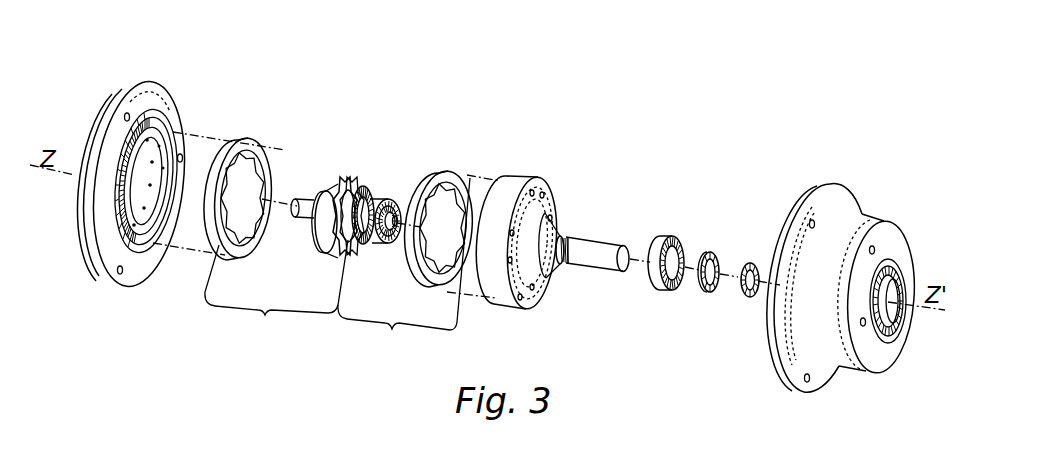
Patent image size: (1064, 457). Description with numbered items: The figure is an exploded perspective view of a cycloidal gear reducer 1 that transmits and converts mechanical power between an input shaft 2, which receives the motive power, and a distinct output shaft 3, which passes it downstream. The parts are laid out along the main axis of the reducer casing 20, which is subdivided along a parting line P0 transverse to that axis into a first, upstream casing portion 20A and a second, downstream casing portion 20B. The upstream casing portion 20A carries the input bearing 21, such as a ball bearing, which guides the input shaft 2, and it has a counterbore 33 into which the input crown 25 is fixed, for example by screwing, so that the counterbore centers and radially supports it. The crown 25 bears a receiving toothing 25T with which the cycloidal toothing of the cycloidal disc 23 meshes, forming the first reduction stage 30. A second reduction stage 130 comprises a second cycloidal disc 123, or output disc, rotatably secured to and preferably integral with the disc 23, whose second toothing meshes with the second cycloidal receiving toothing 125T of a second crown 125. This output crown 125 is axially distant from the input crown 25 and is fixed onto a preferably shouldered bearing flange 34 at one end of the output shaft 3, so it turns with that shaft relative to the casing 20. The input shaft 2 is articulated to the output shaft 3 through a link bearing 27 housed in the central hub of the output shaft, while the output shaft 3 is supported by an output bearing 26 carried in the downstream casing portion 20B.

The cycloidal gear reducer 1 is at (614, 104).
The input shaft 2 is at (308, 201).
The output shaft 3 is at (592, 247).
The reducer casing 20 is at (141, 72).
The first casing portion 20A is at (128, 90).
The second casing portion 20B is at (841, 204).
The parting line P0 is at (153, 93).
The input bearing 21 is at (314, 247).
The cycloidal disc 23 is at (340, 177).
The crown 25 is at (253, 139).
The receiving toothing 25T is at (272, 170).
The output bearing 26 is at (658, 294).
The link bearing 27 is at (385, 199).
The first reduction stage 30 is at (276, 291).
The counterbore 33 is at (158, 148).
The bearing flange 34 is at (502, 311).
The second cycloidal disc 123 is at (359, 186).
The second crown 125 is at (446, 170).
The second cycloidal receiving toothing 125T is at (468, 176).
The second reduction stage 130 is at (404, 270).